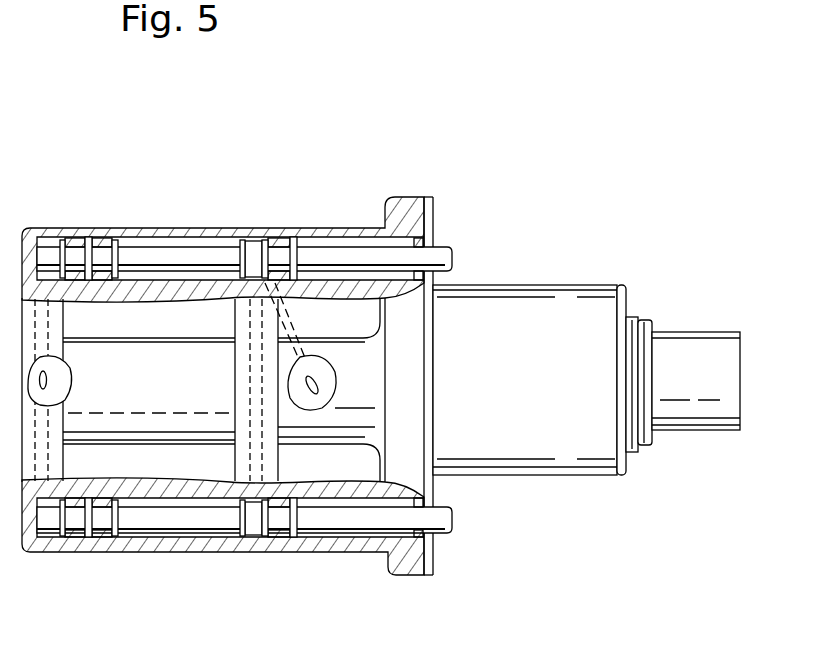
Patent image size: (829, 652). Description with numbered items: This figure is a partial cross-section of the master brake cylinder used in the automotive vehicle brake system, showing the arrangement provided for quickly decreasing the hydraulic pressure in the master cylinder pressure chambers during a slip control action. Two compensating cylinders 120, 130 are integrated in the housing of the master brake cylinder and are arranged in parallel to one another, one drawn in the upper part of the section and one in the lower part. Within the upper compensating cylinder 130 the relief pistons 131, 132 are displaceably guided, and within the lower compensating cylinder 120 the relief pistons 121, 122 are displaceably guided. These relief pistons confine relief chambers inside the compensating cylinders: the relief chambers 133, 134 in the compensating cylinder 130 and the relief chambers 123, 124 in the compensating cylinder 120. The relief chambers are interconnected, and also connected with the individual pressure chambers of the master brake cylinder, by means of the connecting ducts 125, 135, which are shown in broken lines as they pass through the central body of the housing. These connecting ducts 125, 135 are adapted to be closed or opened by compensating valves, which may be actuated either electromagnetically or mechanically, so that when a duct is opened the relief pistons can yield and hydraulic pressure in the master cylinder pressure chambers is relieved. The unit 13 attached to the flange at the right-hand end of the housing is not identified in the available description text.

The drive motor 13 is at (565, 273).
The compensating cylinder 120 is at (190, 543).
The relief piston 121 is at (322, 514).
The relief piston 122 is at (136, 522).
The relief chamber 123 is at (255, 533).
The relief chamber 124 is at (53, 535).
The connecting duct 125 is at (248, 358).
The compensating cylinder 130 is at (188, 231).
The relief piston 131 is at (313, 253).
The relief piston 132 is at (130, 255).
The relief chamber 133 is at (255, 240).
The relief chamber 134 is at (56, 238).
The connecting duct 135 is at (44, 350).